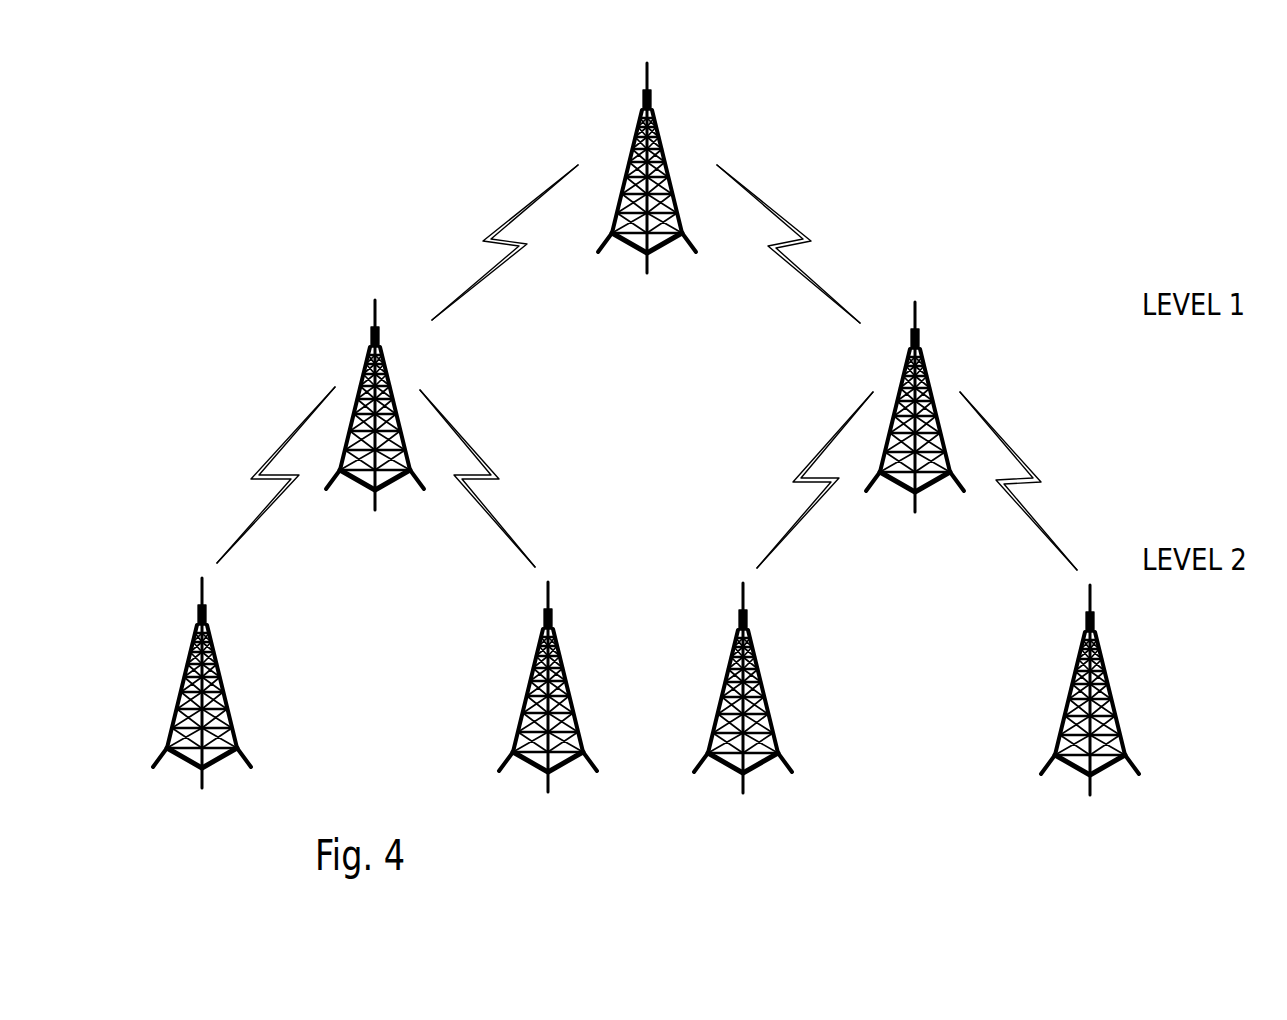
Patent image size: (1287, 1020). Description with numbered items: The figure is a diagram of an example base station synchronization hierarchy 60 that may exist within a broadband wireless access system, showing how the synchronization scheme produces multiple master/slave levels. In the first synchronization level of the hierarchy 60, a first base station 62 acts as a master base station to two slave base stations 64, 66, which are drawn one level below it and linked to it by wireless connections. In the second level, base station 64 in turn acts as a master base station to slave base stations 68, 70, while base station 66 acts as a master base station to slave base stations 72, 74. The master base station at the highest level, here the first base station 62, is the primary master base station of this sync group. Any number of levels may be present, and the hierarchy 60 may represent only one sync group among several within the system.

The base station synchronization hierarchy 60 is at (400, 128).
The first base station 62 is at (655, 115).
The slave base station 64 is at (365, 362).
The slave base station 66 is at (930, 362).
The slave base station 68 is at (213, 642).
The slave base station 70 is at (559, 645).
The slave base station 72 is at (754, 645).
The slave base station 74 is at (1101, 648).